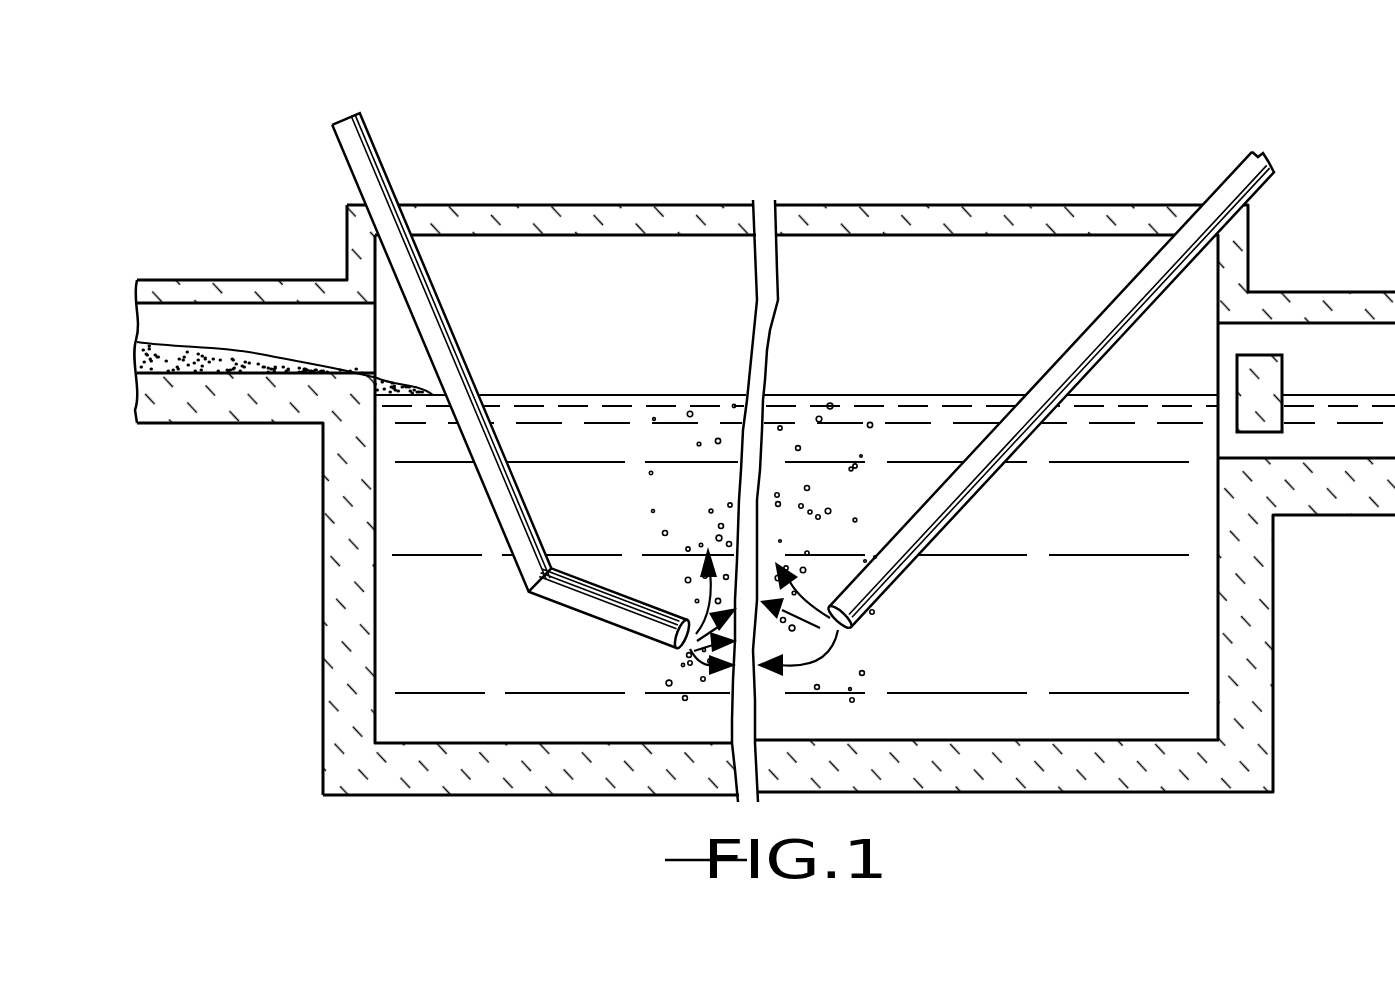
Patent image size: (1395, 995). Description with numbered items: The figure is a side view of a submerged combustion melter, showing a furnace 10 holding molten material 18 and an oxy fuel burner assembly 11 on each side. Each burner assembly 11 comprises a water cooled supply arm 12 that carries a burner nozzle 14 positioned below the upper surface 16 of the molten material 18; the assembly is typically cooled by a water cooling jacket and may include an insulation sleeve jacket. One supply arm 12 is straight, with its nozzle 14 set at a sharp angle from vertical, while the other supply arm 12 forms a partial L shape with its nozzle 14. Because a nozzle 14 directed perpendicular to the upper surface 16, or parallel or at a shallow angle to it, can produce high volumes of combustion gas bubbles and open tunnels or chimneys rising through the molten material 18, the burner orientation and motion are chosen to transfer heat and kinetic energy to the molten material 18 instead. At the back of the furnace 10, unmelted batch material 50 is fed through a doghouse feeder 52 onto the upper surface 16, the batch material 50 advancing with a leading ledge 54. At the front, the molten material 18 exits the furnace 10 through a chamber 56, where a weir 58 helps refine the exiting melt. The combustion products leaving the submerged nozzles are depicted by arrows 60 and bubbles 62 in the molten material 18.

The furnace 10 is at (256, 602).
The oxy fuel burner assembly 11 is at (803, 393).
The water cooled supply arm 12 is at (450, 322).
The burner nozzle 14 is at (583, 613).
The upper surface 16 is at (843, 393).
The molten material 18 is at (1092, 630).
The unmelted batch material 50 is at (133, 356).
The doghouse feeder 52 is at (257, 280).
The leading ledge 54 is at (433, 381).
The chamber 56 is at (1393, 384).
The weir 58 is at (1262, 353).
The arrows 60 is at (700, 572).
The bubbles 62 is at (730, 504).